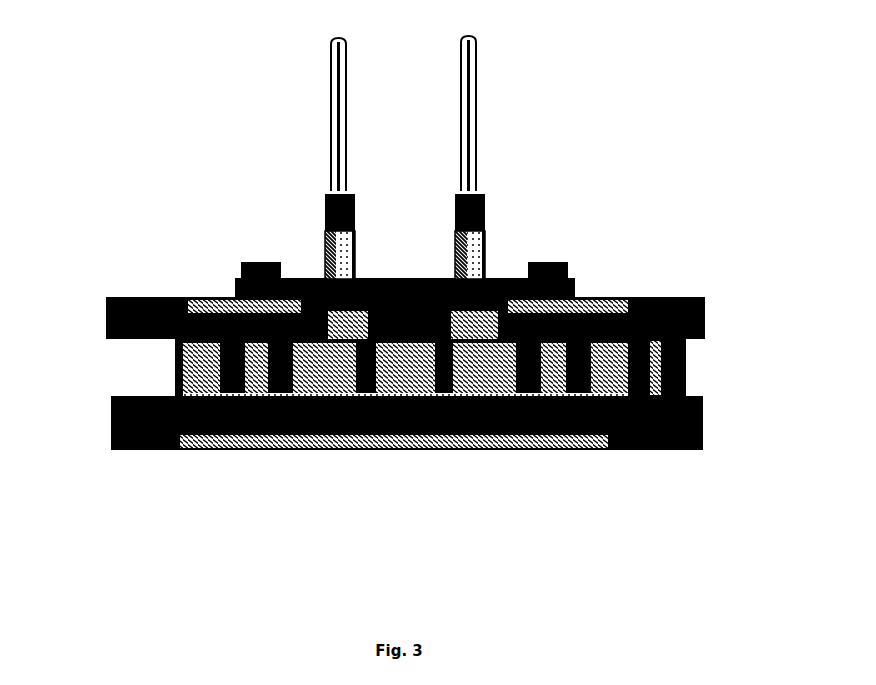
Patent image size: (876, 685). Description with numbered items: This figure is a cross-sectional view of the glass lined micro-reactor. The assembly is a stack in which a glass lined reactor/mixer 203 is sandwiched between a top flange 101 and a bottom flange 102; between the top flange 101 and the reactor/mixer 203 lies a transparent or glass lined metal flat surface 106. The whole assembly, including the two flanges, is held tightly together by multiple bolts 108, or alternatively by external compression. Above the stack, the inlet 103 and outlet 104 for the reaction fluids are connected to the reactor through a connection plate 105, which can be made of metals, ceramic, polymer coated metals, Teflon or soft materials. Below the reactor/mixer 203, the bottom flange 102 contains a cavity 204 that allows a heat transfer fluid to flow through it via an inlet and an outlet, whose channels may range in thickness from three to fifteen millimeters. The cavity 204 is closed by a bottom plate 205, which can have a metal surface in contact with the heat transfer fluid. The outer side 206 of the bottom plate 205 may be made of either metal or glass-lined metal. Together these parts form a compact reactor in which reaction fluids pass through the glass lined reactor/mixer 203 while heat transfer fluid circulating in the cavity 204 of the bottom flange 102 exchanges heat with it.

The top flange 101 is at (697, 295).
The bottom flange 102 is at (695, 405).
The inlet 103 is at (326, 80).
The outlet 104 is at (470, 80).
The connection plate 105 is at (300, 268).
The transparent or glass lined metal flat surface 106 is at (172, 352).
The bolts 108 is at (678, 345).
The glass lined reactor/mixer 203 is at (593, 290).
The cavity 204 is at (685, 440).
The bottom plate 205 is at (510, 441).
The outer side 206 is at (335, 441).